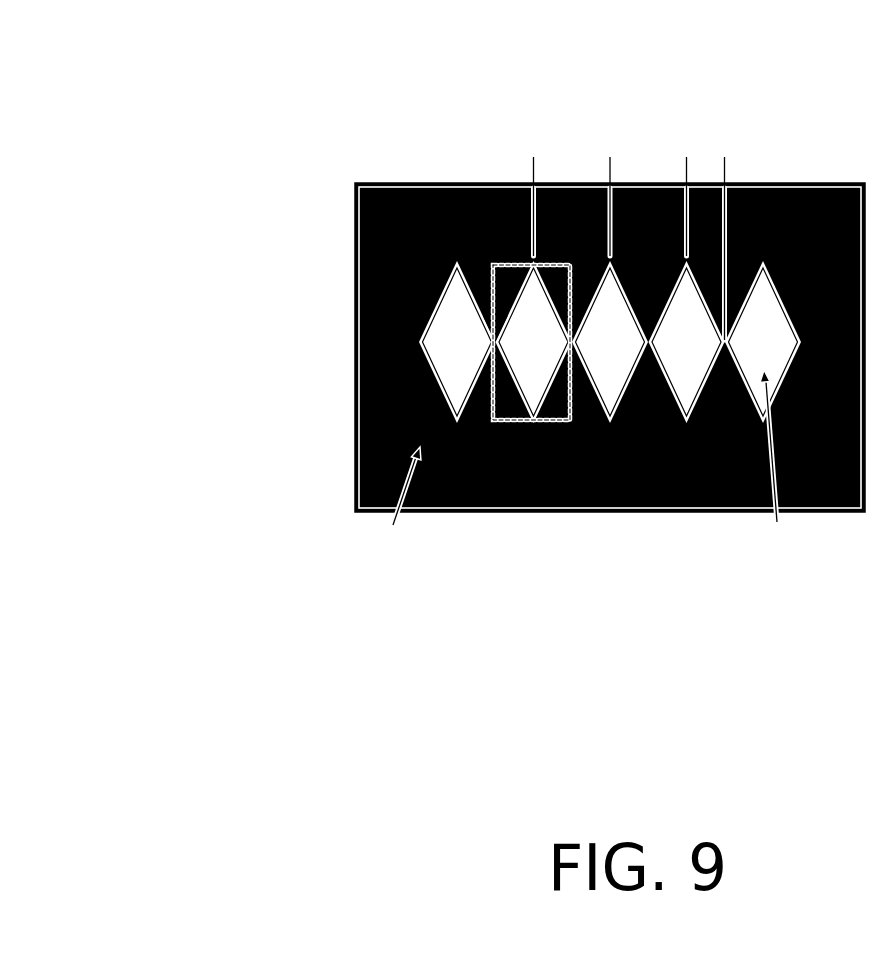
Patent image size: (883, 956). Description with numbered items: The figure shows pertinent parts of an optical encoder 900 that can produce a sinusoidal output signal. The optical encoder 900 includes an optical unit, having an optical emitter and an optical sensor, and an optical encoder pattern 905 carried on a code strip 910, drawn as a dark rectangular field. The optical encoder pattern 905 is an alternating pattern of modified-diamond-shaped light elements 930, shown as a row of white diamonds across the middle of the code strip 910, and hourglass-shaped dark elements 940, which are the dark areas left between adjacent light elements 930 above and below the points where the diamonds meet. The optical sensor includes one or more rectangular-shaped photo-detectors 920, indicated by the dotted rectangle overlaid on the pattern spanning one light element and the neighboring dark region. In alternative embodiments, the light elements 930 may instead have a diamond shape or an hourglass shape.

The optical encoder 900 is at (170, 23).
The optical encoder pattern 905 is at (398, 344).
The code strip 910 is at (795, 172).
The rectangular-shaped photo-detector 920 is at (560, 432).
The modified-diamond-shaped light element 930 is at (462, 306).
The hourglass-shaped dark element 940 is at (493, 306).